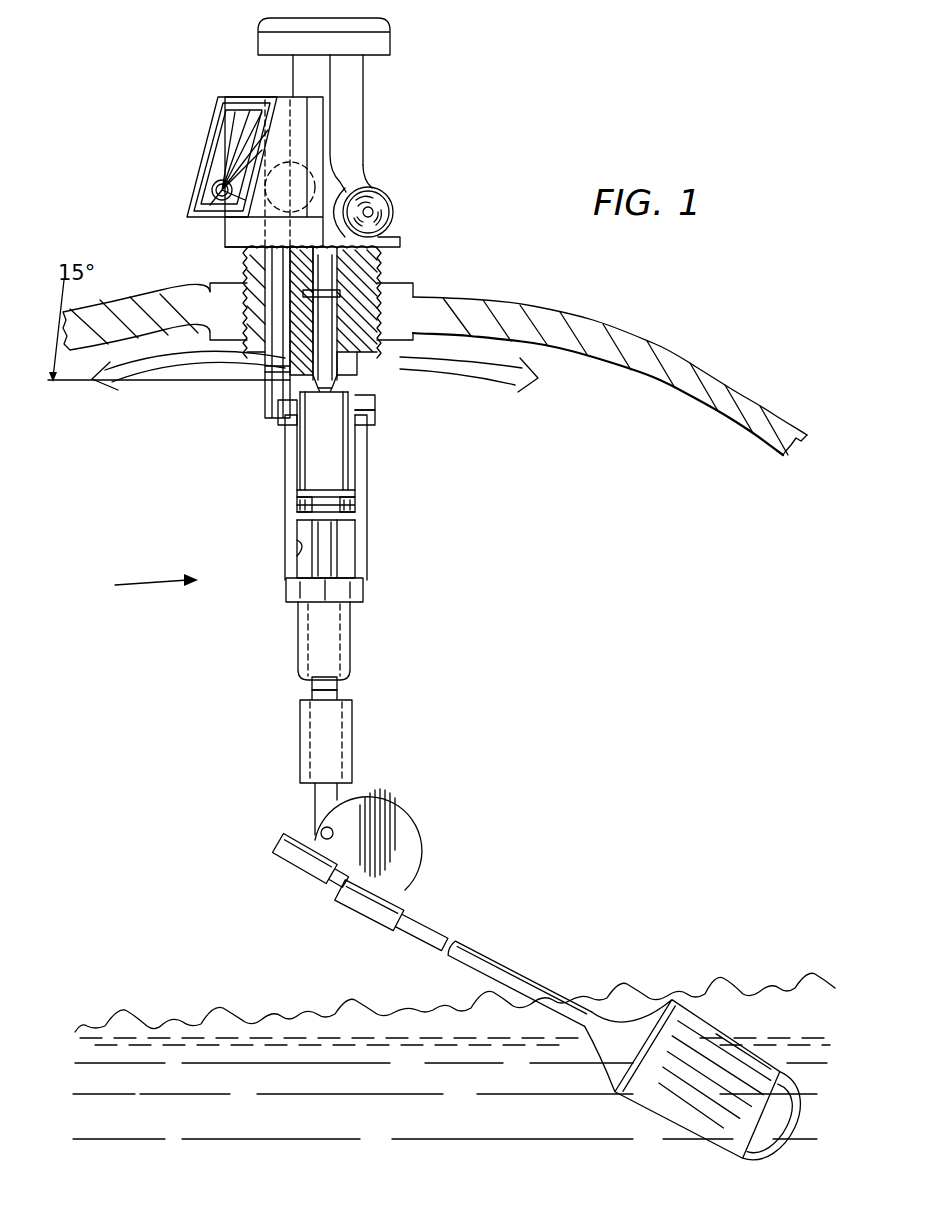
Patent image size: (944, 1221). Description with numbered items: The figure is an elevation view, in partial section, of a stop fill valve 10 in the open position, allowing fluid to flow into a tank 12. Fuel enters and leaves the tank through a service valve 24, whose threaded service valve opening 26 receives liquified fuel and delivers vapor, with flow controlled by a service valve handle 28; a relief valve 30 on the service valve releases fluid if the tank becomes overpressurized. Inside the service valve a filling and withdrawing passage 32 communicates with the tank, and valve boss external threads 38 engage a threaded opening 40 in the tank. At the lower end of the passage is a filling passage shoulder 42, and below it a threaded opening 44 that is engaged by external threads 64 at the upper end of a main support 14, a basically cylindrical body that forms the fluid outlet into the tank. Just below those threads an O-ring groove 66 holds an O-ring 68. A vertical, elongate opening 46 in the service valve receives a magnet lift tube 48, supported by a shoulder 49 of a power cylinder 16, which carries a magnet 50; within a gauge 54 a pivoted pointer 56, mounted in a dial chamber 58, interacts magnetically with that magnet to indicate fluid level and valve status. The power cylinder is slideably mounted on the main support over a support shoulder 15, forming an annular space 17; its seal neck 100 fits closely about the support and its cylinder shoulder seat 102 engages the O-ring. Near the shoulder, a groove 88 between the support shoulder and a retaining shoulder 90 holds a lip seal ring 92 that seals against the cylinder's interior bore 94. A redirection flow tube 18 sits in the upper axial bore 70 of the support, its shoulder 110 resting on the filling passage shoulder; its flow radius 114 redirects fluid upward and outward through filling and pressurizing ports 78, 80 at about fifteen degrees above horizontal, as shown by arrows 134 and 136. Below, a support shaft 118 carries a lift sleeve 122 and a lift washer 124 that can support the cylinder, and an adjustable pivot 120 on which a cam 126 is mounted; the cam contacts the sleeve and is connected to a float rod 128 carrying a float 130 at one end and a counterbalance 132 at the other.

The stop fill valve 10 is at (141, 586).
The tank 12 is at (653, 343).
The main support 14 is at (368, 474).
The support shoulder 15 is at (294, 520).
The power cylinder 16 is at (362, 532).
The annular space 17 is at (362, 452).
The redirection flow tube 18 is at (326, 335).
The service valve 24 is at (392, 116).
The service valve opening 26 is at (356, 165).
The service valve handle 28 is at (392, 28).
The relief valve 30 is at (390, 197).
The filling and withdrawing passage 32 is at (385, 252).
The valve boss external threads 38 is at (246, 322).
The threaded opening 40 is at (215, 336).
The filling passage shoulder 42 is at (384, 279).
The threaded opening 44 is at (413, 292).
The vertical, elongate opening 46 is at (262, 268).
The magnet lift tube 48 is at (266, 372).
The shoulder 49 is at (284, 446).
The magnet 50 is at (282, 145).
The gauge 54 is at (188, 134).
The pivoted pointer 56 is at (212, 188).
The dial chamber 58 is at (225, 95).
The external threads 64 is at (211, 289).
The O-ring groove 66 is at (280, 375).
The O-ring 68 is at (413, 338).
The upper axial bore 70 is at (358, 362).
The filling and pressurizing port 78 is at (282, 418).
The filling and pressurizing port 80 is at (348, 380).
The groove 88 is at (296, 502).
The retaining shoulder 90 is at (356, 494).
The lip seal ring 92 is at (356, 508).
The interior bore 94 is at (292, 562).
The seal neck 100 is at (362, 420).
The cylinder shoulder seat 102 is at (358, 400).
The shoulder 110 is at (256, 278).
The flow radius 114 is at (329, 441).
The support shaft 118 is at (340, 552).
The adjustable pivot 120 is at (320, 830).
The lift sleeve 122 is at (298, 626).
The lift washer 124 is at (366, 594).
The cam 126 is at (400, 795).
The float rod 128 is at (425, 915).
The float 130 is at (660, 1010).
The counterbalance 132 is at (298, 870).
The arrow 134 is at (122, 383).
The arrow 136 is at (483, 370).